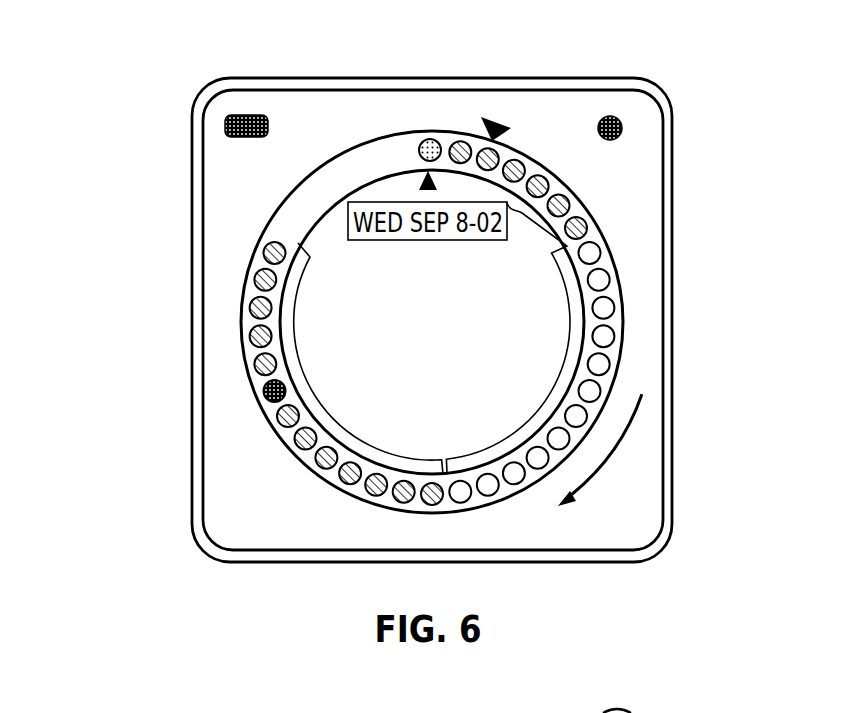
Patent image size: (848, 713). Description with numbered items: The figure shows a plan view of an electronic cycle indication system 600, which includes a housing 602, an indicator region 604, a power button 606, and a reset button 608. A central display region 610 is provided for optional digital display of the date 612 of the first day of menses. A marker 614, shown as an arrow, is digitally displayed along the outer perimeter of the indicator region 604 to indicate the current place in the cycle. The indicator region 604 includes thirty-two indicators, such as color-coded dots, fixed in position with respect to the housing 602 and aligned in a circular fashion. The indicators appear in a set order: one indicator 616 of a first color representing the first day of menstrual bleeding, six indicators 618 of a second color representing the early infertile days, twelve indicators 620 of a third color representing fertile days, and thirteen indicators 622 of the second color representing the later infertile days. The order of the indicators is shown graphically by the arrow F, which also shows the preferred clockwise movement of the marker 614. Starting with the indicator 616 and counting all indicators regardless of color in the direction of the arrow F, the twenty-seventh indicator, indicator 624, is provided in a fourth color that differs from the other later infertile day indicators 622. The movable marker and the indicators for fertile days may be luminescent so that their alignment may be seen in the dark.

The electronic cycle indication system 600 is at (124, 64).
The housing 602 is at (625, 518).
The indicator region 604 is at (353, 163).
The power button 606 is at (615, 116).
The reset button 608 is at (240, 115).
The central display region 610 is at (325, 244).
The date 612 is at (427, 171).
The marker 614 is at (500, 118).
The indicator 616 is at (432, 138).
The indicators 618 is at (530, 208).
The indicators 620 is at (552, 380).
The indicators 622 is at (320, 403).
The indicator 624 is at (258, 400).
The arrow F is at (610, 460).